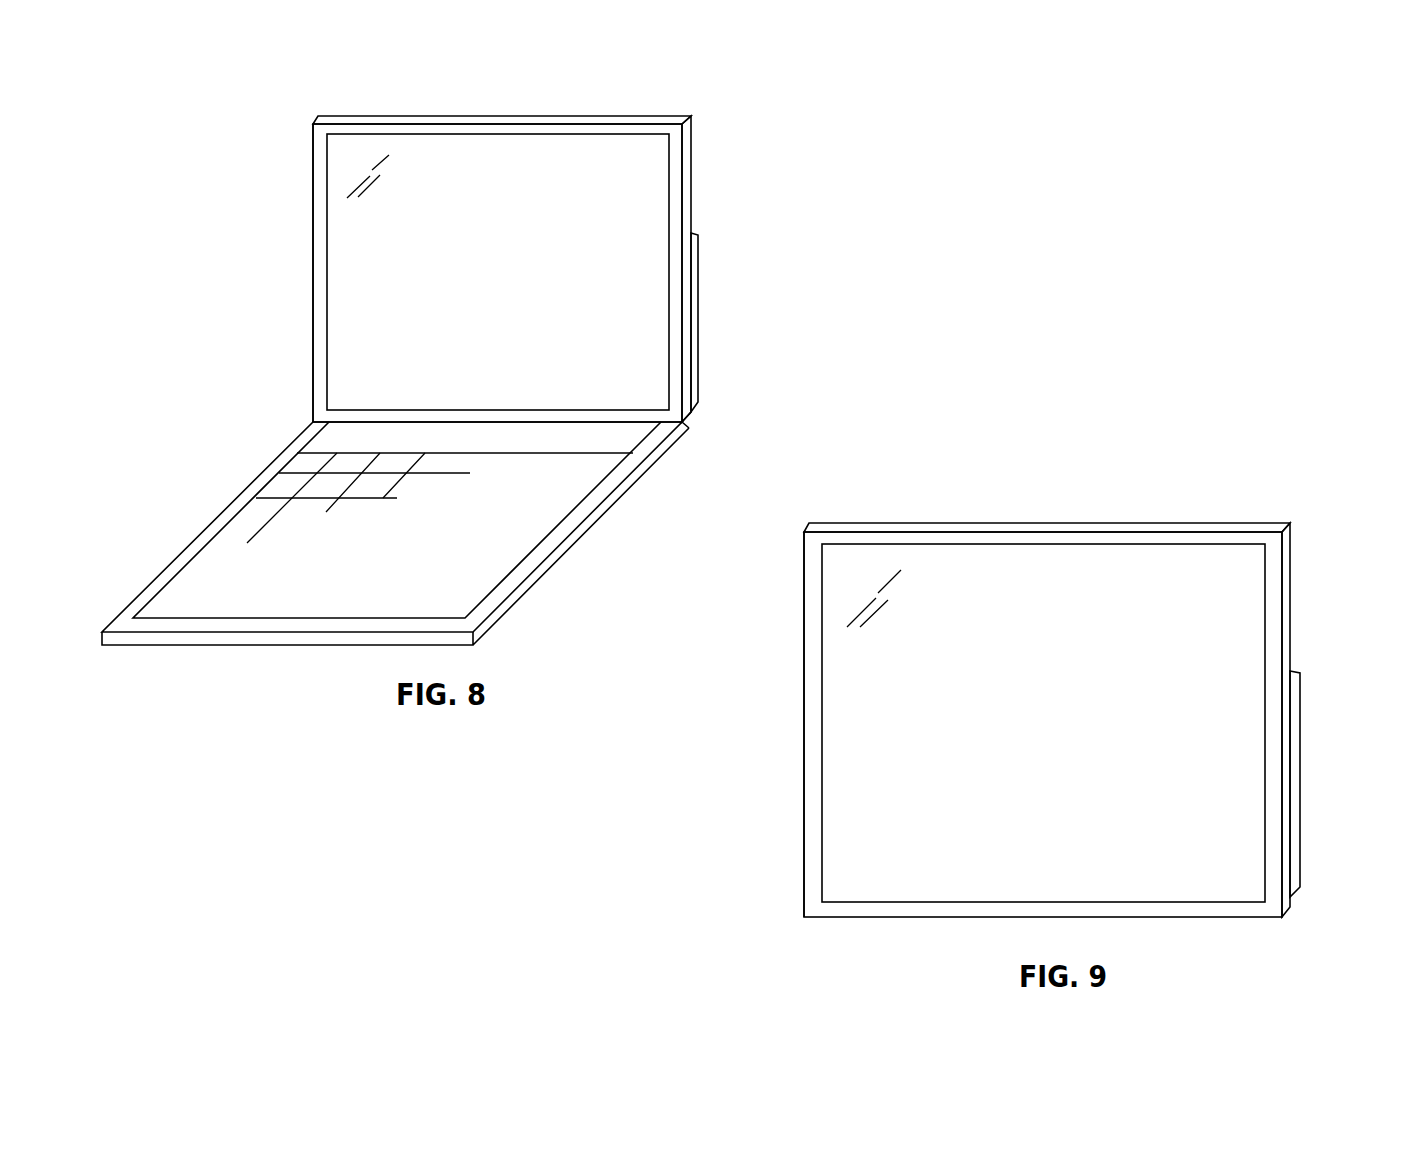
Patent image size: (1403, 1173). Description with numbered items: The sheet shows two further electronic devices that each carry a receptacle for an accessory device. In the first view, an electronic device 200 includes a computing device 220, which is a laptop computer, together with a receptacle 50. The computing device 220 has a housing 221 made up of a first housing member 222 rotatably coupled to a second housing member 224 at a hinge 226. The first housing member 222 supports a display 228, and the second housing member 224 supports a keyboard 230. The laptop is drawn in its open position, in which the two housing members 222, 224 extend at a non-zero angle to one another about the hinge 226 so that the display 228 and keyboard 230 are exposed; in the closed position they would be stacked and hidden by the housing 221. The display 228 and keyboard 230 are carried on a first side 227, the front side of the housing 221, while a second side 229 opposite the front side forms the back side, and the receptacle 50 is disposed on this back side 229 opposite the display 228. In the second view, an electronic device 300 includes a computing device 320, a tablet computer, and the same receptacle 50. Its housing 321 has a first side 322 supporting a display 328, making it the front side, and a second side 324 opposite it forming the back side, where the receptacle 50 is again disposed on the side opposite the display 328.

In FIG. 8, the electronic device 200 is at (755, 160).
In FIG. 8, the computing device 220 is at (312, 120).
In FIG. 8, the housing 221 is at (487, 117).
In FIG. 8, the first housing member 222 is at (313, 218).
In FIG. 8, the second housing member 224 is at (223, 518).
In FIG. 8, the hinge 226 is at (683, 422).
In FIG. 8, the first side 227 is at (325, 362).
In FIG. 8, the display 228 is at (347, 297).
In FIG. 8, the second side 229 is at (708, 390).
In FIG. 8, the keyboard 230 is at (482, 567).
In FIG. 8, the receptacle 50 is at (700, 265).
In FIG. 9, the receptacle 50 is at (1303, 728).
In FIG. 9, the electronic device 300 is at (1317, 481).
In FIG. 9, the computing device 320 is at (799, 548).
In FIG. 9, the housing 321 is at (966, 522).
In FIG. 9, the first side 322 is at (838, 752).
In FIG. 9, the second side 324 is at (1294, 583).
In FIG. 9, the display 328 is at (1114, 577).